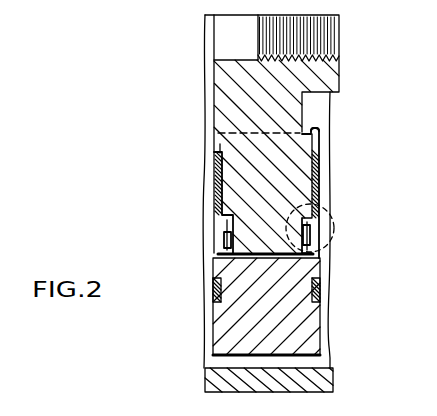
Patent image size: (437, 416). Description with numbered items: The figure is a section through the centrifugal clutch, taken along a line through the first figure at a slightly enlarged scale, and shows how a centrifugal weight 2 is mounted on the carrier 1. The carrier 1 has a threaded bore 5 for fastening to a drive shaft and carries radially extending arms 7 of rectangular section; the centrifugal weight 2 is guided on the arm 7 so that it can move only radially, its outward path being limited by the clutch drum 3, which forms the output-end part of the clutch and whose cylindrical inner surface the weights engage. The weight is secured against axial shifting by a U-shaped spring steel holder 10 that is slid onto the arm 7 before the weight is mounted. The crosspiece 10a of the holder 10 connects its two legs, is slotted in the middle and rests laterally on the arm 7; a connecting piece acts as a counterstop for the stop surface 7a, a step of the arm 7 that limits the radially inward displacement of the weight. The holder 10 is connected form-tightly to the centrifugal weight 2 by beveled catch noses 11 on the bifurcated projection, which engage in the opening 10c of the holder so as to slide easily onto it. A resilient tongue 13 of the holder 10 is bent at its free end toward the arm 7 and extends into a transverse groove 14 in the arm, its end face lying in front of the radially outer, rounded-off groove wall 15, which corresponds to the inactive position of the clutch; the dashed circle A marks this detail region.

The carrier 1 is at (240, 86).
The centrifugal weight 2 is at (256, 152).
The clutch drum 3 is at (318, 382).
The threaded bore 5 is at (336, 45).
The arm 7 is at (265, 202).
The stop surface 7a is at (217, 155).
The holder 10 is at (335, 163).
The crosspiece 10a is at (315, 127).
The opening 10c is at (219, 285).
The catch nose 11 is at (214, 277).
The resilient tongue 13 is at (215, 178).
The transverse groove 14 is at (222, 240).
The groove wall 15 is at (216, 252).
The detail region A is at (334, 222).